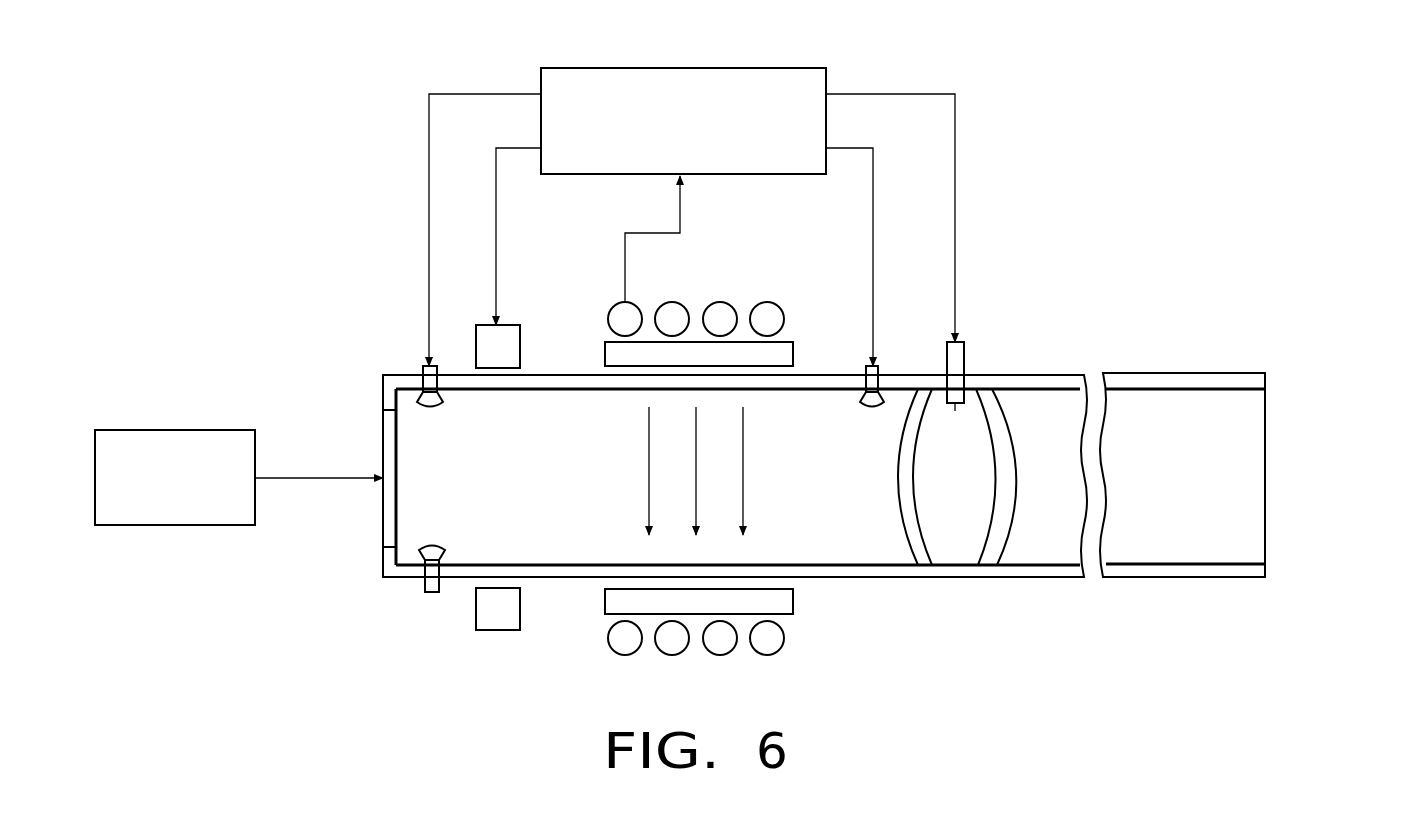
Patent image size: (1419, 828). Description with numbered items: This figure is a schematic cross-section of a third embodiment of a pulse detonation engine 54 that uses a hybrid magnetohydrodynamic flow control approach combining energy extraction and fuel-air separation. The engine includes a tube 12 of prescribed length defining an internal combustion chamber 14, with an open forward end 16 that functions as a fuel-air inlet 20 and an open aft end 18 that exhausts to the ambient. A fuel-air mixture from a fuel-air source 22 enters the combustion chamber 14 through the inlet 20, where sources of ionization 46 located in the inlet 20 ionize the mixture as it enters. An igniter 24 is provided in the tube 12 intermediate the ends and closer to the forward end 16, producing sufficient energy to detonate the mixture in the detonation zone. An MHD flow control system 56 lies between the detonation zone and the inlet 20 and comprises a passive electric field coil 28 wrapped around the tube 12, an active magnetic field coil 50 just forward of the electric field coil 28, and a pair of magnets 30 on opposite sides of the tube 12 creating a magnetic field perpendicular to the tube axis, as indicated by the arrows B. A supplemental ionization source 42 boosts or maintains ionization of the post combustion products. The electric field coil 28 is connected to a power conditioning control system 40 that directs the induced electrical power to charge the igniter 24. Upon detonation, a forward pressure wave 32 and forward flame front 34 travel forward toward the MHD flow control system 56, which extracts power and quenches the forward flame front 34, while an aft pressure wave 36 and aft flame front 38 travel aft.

The tube 12 is at (862, 577).
The combustion chamber 14 is at (450, 459).
The open forward end 16 is at (383, 380).
The open aft end 18 is at (1265, 512).
The fuel-air inlet 20 is at (390, 548).
The fuel-air source 22 is at (165, 430).
The igniter 24 is at (958, 362).
The passive electric field coil 28 is at (767, 302).
The magnets 30 is at (605, 355).
The forward pressure wave 32 is at (900, 488).
The forward flame front 34 is at (918, 499).
The aft pressure wave 36 is at (1010, 540).
The aft flame front 38 is at (998, 483).
The power conditioning control system 40 is at (571, 68).
The supplemental ionization source 42 is at (868, 368).
The sources of ionization 46 is at (425, 368).
The active magnetic field coil 50 is at (519, 328).
The pulse detonation engine 54 is at (1293, 345).
The MHD flow control system 56 is at (369, 160).
The arrows indicating magnetic field direction B is at (649, 428).